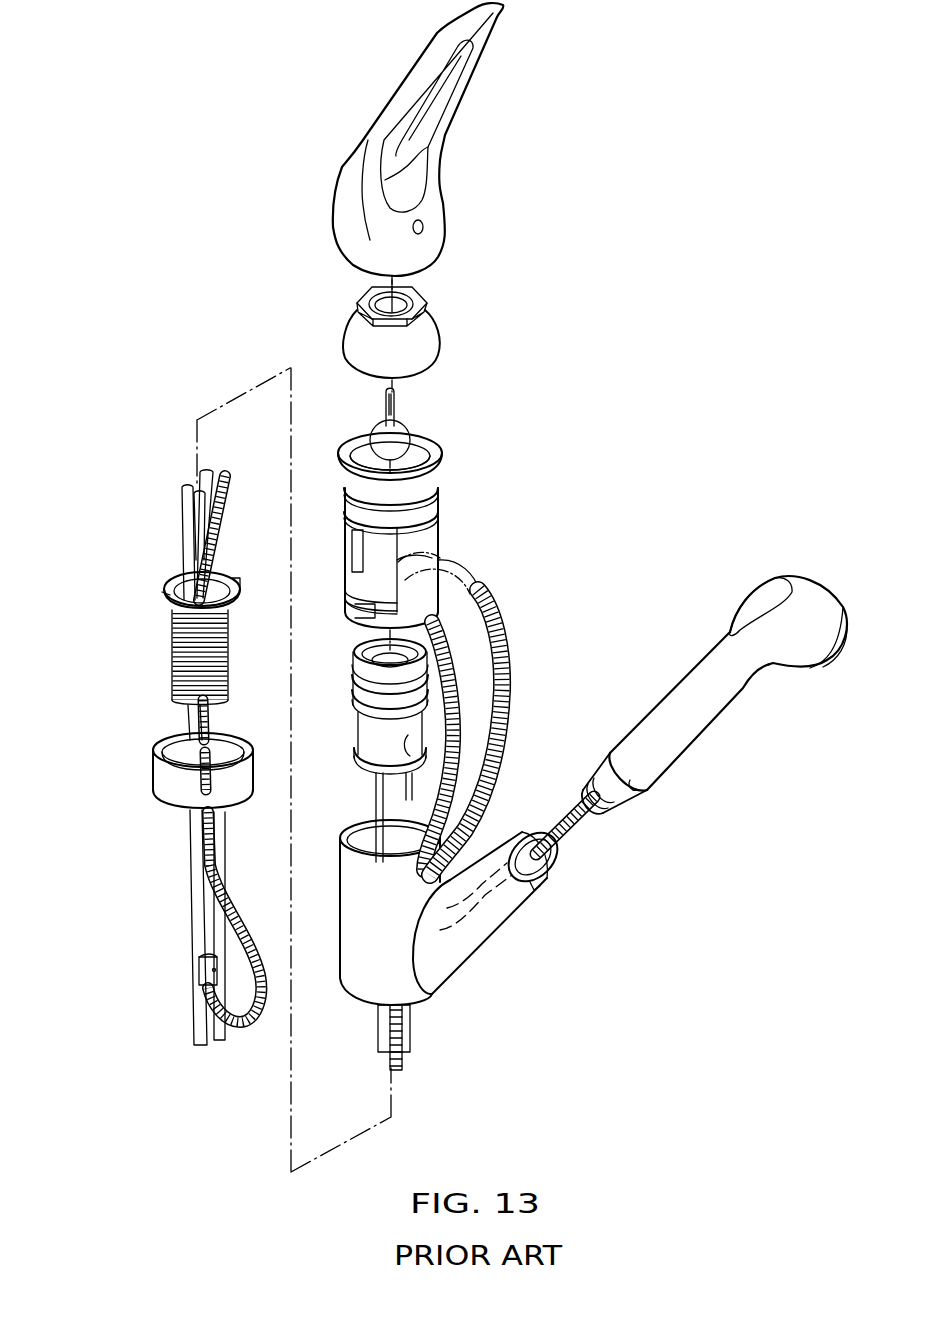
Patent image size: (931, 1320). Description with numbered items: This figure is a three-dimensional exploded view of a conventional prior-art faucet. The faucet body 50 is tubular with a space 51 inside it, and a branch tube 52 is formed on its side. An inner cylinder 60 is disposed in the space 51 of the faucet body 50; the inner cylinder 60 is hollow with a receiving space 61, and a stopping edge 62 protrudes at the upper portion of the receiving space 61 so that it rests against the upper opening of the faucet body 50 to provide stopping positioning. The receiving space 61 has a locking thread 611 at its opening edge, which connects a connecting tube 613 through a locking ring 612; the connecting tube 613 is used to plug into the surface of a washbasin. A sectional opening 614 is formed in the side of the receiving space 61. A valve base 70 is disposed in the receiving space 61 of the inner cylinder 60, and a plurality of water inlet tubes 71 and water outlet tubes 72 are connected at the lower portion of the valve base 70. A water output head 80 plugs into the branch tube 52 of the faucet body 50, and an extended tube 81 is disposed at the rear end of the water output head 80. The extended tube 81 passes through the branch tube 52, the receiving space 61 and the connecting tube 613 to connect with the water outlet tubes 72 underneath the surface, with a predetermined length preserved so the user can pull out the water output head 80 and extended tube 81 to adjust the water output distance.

The faucet body 50 is at (364, 1008).
The space 51 is at (365, 830).
The branch tube 52 is at (470, 970).
The inner cylinder 60 is at (453, 496).
The receiving space 61 is at (378, 441).
The stopping edge 62 is at (445, 452).
The locking thread 611 is at (352, 602).
The locking ring 612 is at (160, 784).
The connecting tube 613 is at (170, 652).
The sectional opening 614 is at (442, 545).
The valve base 70 is at (357, 688).
The water inlet tubes 71 is at (210, 468).
The water outlet tubes 72 is at (192, 496).
The water output head 80 is at (688, 692).
The extended tube 81 is at (565, 840).